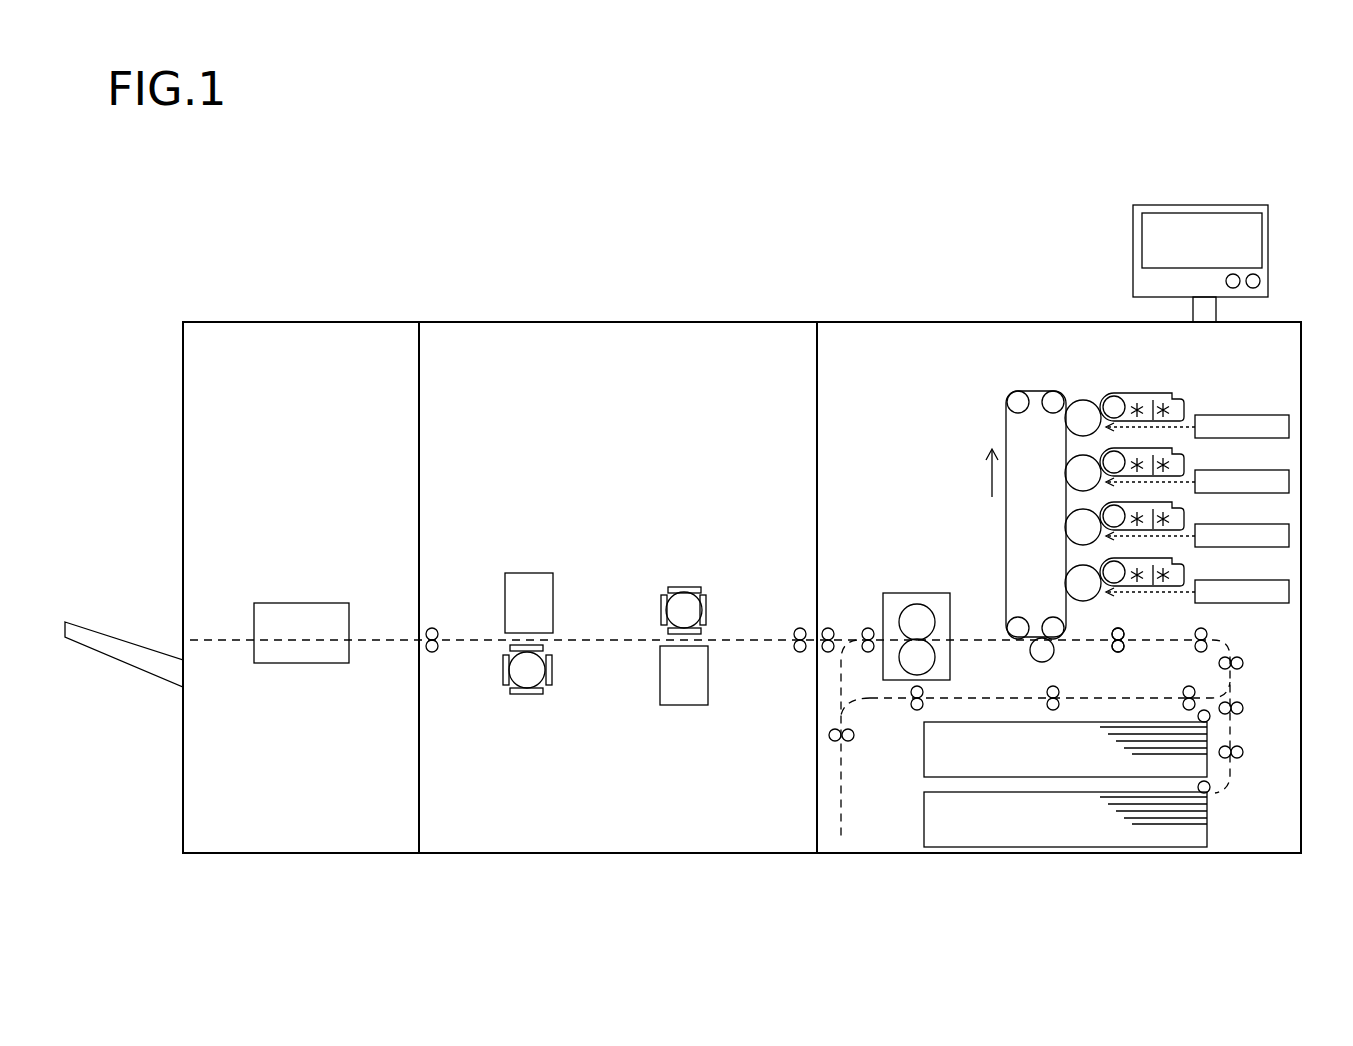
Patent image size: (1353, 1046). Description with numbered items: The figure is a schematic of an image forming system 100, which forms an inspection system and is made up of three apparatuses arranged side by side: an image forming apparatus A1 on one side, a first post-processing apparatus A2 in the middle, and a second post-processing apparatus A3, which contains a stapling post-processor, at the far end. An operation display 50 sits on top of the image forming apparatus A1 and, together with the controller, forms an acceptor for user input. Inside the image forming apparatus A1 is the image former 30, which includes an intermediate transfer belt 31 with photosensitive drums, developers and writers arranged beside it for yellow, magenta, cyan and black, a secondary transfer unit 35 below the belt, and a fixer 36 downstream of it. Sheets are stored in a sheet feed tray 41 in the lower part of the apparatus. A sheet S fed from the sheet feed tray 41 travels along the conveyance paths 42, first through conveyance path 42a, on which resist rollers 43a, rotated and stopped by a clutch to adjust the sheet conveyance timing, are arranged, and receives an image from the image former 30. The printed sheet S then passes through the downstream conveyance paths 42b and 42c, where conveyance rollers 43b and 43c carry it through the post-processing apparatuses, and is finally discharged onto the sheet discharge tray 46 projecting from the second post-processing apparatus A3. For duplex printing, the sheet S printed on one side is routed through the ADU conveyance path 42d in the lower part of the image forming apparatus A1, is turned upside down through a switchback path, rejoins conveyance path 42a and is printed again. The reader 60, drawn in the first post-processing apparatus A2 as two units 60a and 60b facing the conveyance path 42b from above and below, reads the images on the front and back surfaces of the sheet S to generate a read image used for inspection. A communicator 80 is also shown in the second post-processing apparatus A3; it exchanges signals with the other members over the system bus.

The image forming system 100 is at (350, 218).
The image forming apparatus A1 is at (859, 272).
The first post-processing apparatus A2 is at (603, 283).
The second post-processing apparatus A3 is at (347, 278).
The operation display 50 is at (1268, 247).
The image former 30 is at (1082, 510).
The intermediate transfer belt 31 is at (1028, 392).
The secondary transfer unit 35 is at (1030, 657).
The fixer 36 is at (915, 593).
The sheet feed tray 41 is at (920, 760).
The sheet S is at (1125, 725).
The conveyance paths 42 is at (741, 711).
The conveyance path 42a is at (1134, 640).
The conveyance path 42b is at (778, 645).
The conveyance path 42c is at (400, 645).
The ADU conveyance path 42d is at (870, 700).
The resist rollers 43a is at (1123, 651).
The conveyance rollers 43b is at (865, 629).
The conveyance rollers 43c is at (797, 629).
The sheet discharge tray 46 is at (108, 628).
The reader 60 is at (605, 580).
The post-processing unit 60a is at (660, 608).
The post-processing unit 60b is at (541, 562).
The communicator 80 is at (297, 603).